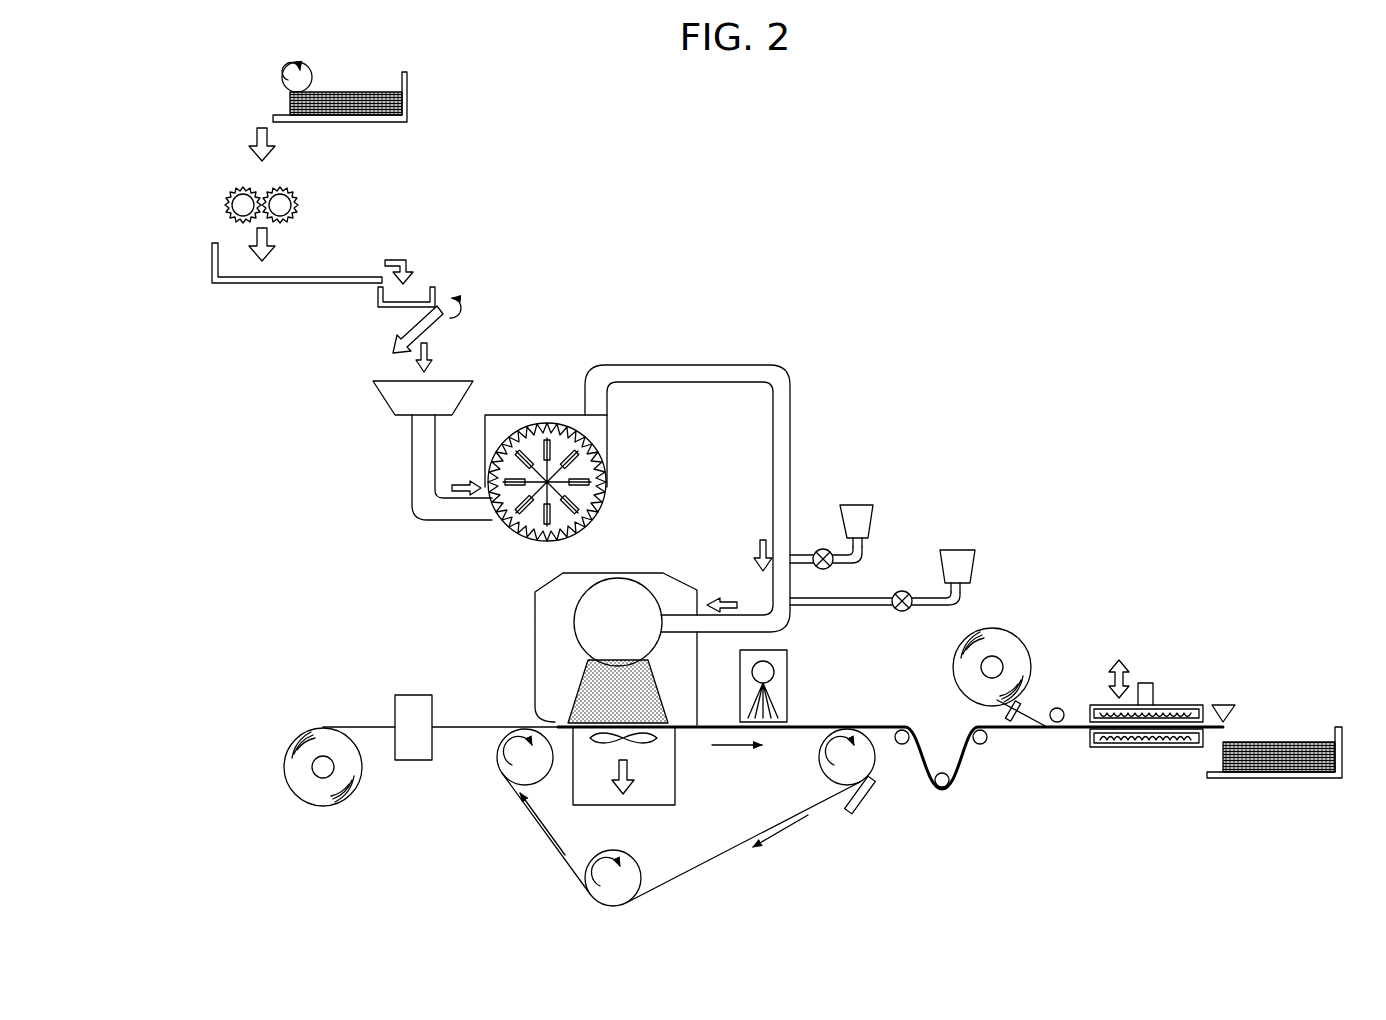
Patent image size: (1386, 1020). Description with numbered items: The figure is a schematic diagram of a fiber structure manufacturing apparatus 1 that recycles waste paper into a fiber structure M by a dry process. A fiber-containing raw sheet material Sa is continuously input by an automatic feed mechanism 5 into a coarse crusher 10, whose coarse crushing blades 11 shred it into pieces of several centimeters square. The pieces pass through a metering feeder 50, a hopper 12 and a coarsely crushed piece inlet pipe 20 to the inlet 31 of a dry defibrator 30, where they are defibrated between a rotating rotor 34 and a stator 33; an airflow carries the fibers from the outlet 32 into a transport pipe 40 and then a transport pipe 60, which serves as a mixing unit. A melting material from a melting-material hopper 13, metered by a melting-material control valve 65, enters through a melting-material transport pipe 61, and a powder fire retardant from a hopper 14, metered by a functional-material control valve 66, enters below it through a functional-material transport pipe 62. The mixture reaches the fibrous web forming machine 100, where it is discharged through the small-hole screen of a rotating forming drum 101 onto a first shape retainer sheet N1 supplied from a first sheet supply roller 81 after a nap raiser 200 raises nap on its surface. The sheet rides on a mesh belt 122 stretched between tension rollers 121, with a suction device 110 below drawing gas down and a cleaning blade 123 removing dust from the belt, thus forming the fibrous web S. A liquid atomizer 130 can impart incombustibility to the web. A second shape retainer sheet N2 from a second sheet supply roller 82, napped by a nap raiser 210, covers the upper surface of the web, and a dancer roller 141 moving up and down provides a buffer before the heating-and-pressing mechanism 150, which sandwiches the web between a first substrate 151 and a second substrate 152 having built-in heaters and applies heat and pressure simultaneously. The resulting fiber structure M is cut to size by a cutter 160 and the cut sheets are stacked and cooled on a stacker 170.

The fiber structure manufacturing apparatus 1 is at (678, 204).
The automatic feed mechanism 5 is at (412, 96).
The raw sheet material Sa is at (317, 95).
The coarse crusher 10 is at (211, 175).
The coarse crushing blades 11 is at (276, 190).
The metering feeder 50 is at (246, 285).
The hopper 12 is at (388, 400).
The coarsely crushed piece inlet pipe 20 is at (412, 470).
The dry defibrator 30 is at (552, 456).
The inlet 31 is at (497, 518).
The outlet 32 is at (607, 405).
The stator 33 is at (602, 478).
The rotor 34 is at (585, 497).
The transport pipe 40 is at (677, 365).
The transport pipe 60 is at (772, 605).
The melting-material transport pipe 61 is at (866, 563).
The functional-material transport pipe 62 is at (962, 603).
The melting-material control valve 65 is at (823, 547).
The functional-material control valve 66 is at (903, 614).
The melting-material hopper 13 is at (855, 503).
The hopper 14 is at (953, 548).
The fibrous web forming machine 100 is at (535, 628).
The forming drum 101 is at (578, 643).
The suction device 110 is at (677, 793).
The tension rollers 121 is at (499, 757).
The mesh belt 122 is at (760, 846).
The cleaning blade 123 is at (855, 816).
The liquid atomizer 130 is at (790, 665).
The dancer roller 141 is at (960, 776).
The heating-and-pressing mechanism 150 is at (1146, 697).
The first substrate 151 is at (1175, 748).
The second substrate 152 is at (1162, 705).
The cutter 160 is at (1224, 703).
The stacker 170 is at (1275, 779).
The nap raiser 200 is at (415, 694).
The nap raiser 210 is at (1005, 712).
The first sheet supply roller 81 is at (300, 795).
The second sheet supply roller 82 is at (1018, 642).
The fibrous web S is at (834, 726).
The fiber structure M is at (1278, 741).
The first shape retainer sheet N1 is at (380, 726).
The second shape retainer sheet N2 is at (1050, 712).